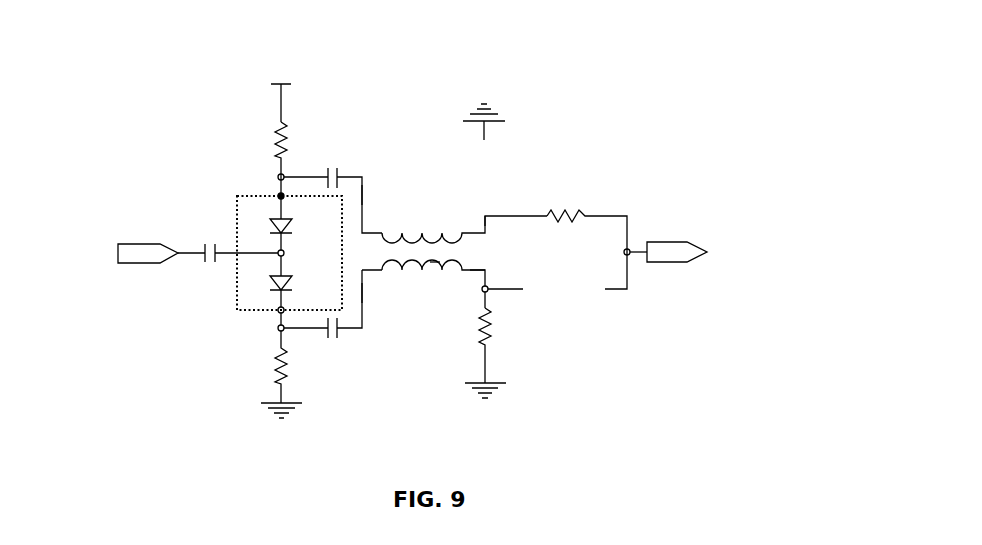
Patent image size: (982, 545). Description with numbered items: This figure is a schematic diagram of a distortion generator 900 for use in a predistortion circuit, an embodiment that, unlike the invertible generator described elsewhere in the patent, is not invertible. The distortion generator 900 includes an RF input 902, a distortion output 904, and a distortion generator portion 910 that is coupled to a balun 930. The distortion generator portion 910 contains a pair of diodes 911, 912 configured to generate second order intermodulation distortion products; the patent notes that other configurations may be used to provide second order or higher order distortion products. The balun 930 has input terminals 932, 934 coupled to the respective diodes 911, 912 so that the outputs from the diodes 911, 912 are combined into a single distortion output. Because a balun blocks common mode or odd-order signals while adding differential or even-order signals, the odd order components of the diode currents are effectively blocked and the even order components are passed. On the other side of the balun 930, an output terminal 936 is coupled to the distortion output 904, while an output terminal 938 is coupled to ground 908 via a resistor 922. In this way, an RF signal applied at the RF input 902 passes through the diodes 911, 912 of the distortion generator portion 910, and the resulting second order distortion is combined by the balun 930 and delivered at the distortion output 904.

The distortion generator 900 is at (178, 87).
The RF input 902 is at (132, 264).
The distortion output 904 is at (673, 263).
The ground 908 is at (500, 390).
The distortion generator portion 910 is at (178, 203).
The diode 911 is at (270, 219).
The diode 912 is at (268, 277).
The resistor 922 is at (490, 336).
The balun 930 is at (438, 292).
The input terminal 932 is at (363, 195).
The input terminal 934 is at (363, 293).
The output terminal 936 is at (485, 215).
The output terminal 938 is at (486, 270).